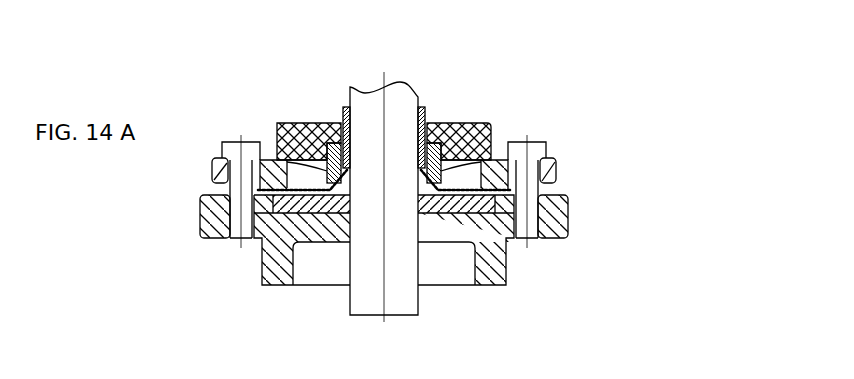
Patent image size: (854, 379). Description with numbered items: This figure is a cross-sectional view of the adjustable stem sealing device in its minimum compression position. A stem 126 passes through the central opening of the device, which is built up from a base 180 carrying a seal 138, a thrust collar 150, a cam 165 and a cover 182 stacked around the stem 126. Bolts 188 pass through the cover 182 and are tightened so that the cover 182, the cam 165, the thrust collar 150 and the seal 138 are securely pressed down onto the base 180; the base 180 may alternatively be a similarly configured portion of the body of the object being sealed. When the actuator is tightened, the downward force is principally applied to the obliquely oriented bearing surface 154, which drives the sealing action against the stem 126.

The stem 126 is at (418, 97).
The cam 165 is at (425, 110).
The cover 182 is at (491, 121).
The bolts 188 is at (547, 142).
The thrust collar 150 is at (509, 188).
The base 180 is at (508, 277).
The seal 138 is at (274, 214).
The obliquely oriented bearing surface 154 is at (287, 162).